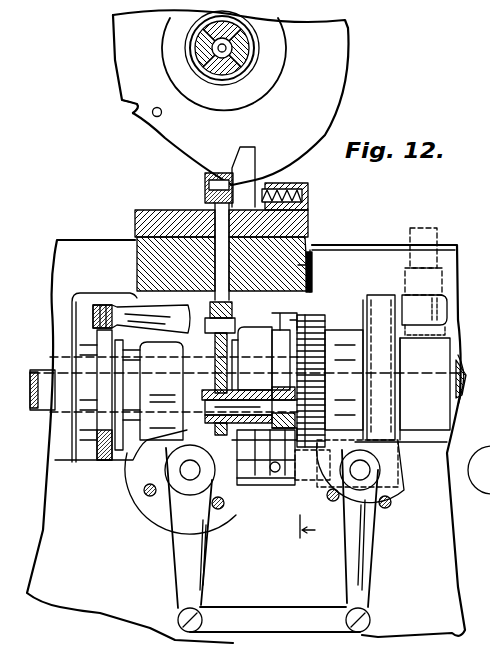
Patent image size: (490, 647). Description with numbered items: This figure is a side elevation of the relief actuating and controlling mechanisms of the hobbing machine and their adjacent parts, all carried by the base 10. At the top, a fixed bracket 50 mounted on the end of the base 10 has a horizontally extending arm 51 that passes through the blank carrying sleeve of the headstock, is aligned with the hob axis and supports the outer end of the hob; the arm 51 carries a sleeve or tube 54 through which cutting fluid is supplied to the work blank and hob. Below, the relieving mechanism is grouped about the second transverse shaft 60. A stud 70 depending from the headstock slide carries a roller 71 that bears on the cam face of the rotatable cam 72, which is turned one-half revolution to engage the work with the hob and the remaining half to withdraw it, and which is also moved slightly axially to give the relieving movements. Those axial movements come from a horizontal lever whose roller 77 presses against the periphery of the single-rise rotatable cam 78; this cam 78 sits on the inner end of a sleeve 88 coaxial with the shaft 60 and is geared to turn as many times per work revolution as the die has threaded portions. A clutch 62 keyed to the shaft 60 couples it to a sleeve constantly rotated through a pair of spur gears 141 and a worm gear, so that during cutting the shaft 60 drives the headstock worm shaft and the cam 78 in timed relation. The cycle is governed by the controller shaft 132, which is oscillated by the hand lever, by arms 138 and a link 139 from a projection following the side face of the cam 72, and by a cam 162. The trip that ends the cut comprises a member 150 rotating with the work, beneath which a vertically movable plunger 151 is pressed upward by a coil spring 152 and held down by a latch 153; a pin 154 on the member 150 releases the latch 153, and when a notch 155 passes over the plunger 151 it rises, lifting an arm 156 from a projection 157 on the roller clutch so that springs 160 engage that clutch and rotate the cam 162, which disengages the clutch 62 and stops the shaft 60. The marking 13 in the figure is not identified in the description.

The base 10 is at (85, 588).
The dimension/spacing 13 is at (321, 393).
The fixed bracket 50 is at (296, 207).
The arm 51 is at (242, 60).
The sleeve or tube 54 is at (232, 48).
The second transverse shaft 60 is at (462, 392).
The clutch 62 is at (135, 455).
The stud 70 is at (436, 278).
The roller 71 is at (447, 310).
The rotatable cam 72 is at (377, 300).
The roller 77 is at (103, 307).
The rotatable cam 78 is at (104, 455).
The sleeve 88 is at (52, 366).
The controller shaft 132 is at (189, 470).
The arms 138 is at (180, 584).
The link 139 is at (285, 602).
The spur gears 141 is at (303, 318).
The member 150 is at (172, 145).
The plunger 151 is at (137, 288).
The coil spring 152 is at (205, 194).
The latch 153 is at (244, 170).
The pin 154 is at (156, 107).
The notch 155 is at (133, 105).
The arm 156 is at (268, 482).
The projection 157 is at (327, 332).
The springs 160 is at (270, 328).
The cam 162 is at (262, 300).